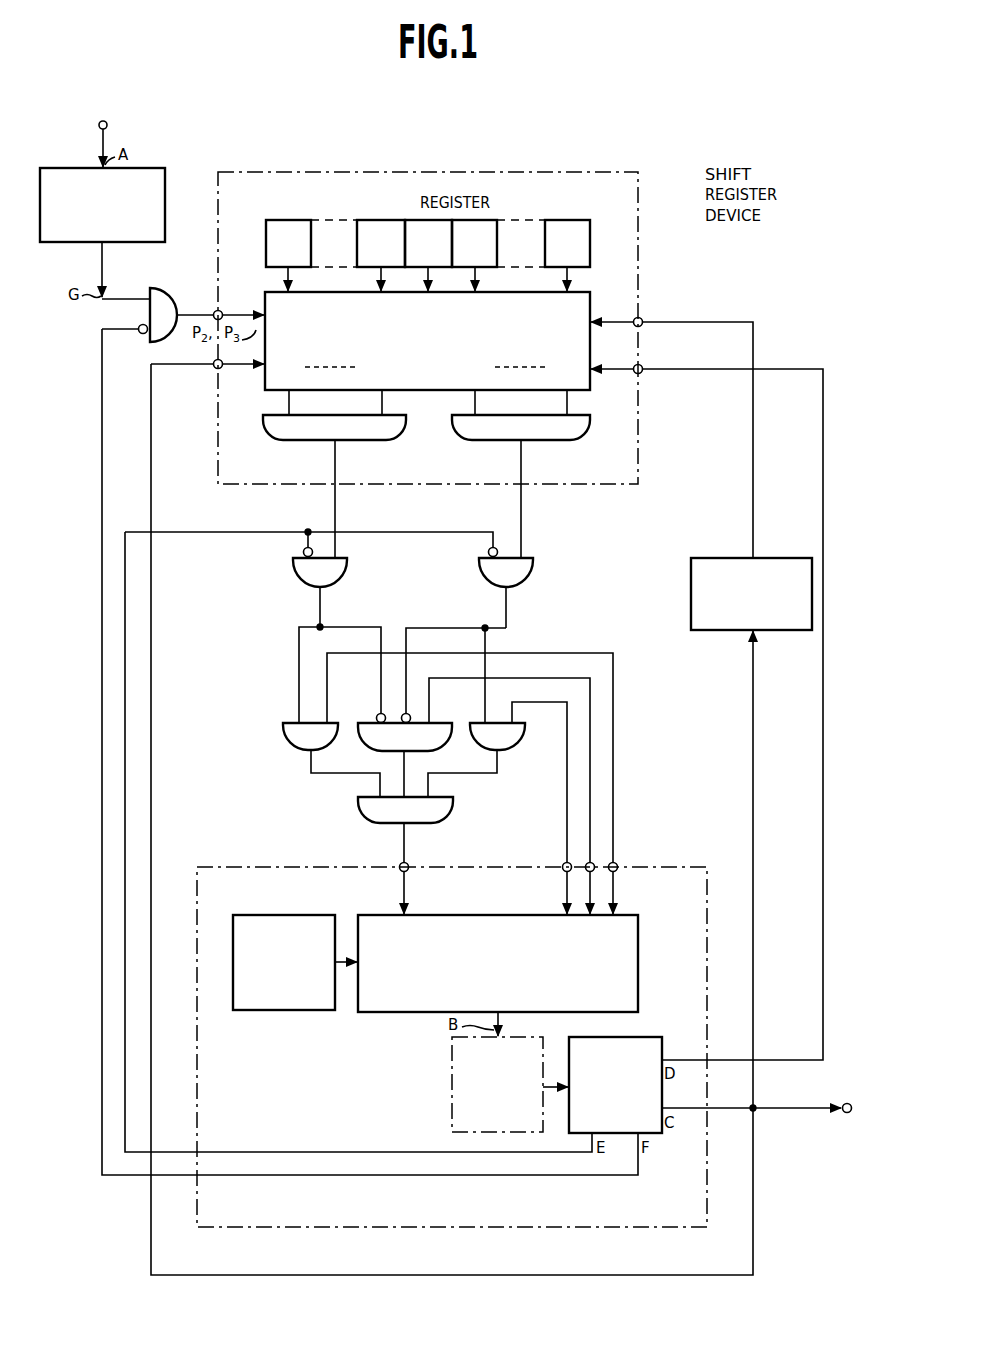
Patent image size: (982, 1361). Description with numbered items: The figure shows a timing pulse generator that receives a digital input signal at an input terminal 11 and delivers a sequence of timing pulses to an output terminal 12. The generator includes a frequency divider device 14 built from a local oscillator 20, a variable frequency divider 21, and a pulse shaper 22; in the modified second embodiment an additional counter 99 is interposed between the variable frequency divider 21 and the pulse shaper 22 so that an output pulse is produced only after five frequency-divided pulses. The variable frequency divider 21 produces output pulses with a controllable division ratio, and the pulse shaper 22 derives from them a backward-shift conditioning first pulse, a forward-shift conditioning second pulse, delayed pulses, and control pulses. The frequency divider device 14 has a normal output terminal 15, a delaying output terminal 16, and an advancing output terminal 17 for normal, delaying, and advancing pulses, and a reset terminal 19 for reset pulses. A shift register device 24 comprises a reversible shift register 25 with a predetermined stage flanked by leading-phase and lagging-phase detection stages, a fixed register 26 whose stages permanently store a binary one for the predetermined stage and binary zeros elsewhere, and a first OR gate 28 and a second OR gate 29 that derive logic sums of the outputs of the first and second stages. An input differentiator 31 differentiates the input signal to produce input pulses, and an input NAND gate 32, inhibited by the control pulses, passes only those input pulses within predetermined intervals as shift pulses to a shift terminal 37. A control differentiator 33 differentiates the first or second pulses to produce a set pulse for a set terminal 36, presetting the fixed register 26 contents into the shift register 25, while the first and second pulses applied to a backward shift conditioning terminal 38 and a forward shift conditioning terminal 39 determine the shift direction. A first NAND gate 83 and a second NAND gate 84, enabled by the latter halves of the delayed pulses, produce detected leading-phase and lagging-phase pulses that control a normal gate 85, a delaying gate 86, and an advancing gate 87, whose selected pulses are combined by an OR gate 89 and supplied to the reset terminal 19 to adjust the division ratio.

The input terminal 11 is at (115, 120).
The input differentiator 31 is at (167, 172).
The input NAND gate 32 is at (163, 288).
The shift terminal 37 is at (221, 310).
The backward shift conditioning terminal 38 is at (214, 369).
The shift register device 24 is at (641, 222).
The fixed register 26 is at (383, 220).
The reversible shift register 25 is at (592, 296).
The set terminal 36 is at (641, 318).
The forward shift conditioning terminal 39 is at (641, 365).
The first OR gate 28 is at (368, 442).
The second OR gate 29 is at (562, 442).
The first NAND gate 83 is at (344, 582).
The second NAND gate 84 is at (530, 582).
The normal gate 85 is at (374, 717).
The delaying gate 86 is at (281, 742).
The advancing gate 87 is at (474, 733).
The OR gate 89 is at (450, 808).
The frequency divider device 14 is at (252, 866).
The reset terminal 19 is at (400, 863).
The advancing output terminal 17 is at (563, 863).
The normal output terminal 15 is at (587, 862).
The delaying output terminal 16 is at (617, 862).
The local oscillator 20 is at (272, 915).
The variable frequency divider 21 is at (640, 960).
The additional counter 99 is at (452, 1078).
The pulse shaper 22 is at (660, 1040).
The output terminal 12 is at (850, 1104).
The control differentiator 33 is at (724, 558).